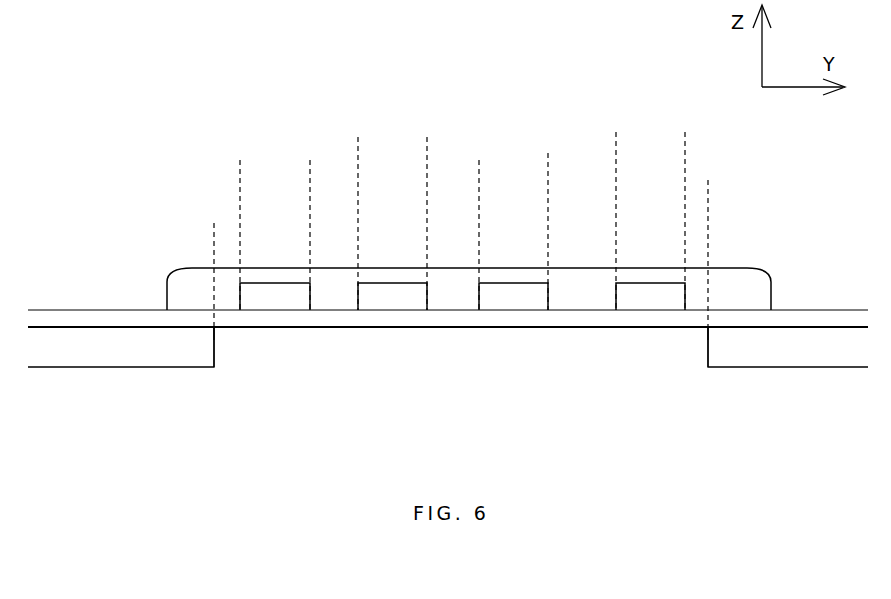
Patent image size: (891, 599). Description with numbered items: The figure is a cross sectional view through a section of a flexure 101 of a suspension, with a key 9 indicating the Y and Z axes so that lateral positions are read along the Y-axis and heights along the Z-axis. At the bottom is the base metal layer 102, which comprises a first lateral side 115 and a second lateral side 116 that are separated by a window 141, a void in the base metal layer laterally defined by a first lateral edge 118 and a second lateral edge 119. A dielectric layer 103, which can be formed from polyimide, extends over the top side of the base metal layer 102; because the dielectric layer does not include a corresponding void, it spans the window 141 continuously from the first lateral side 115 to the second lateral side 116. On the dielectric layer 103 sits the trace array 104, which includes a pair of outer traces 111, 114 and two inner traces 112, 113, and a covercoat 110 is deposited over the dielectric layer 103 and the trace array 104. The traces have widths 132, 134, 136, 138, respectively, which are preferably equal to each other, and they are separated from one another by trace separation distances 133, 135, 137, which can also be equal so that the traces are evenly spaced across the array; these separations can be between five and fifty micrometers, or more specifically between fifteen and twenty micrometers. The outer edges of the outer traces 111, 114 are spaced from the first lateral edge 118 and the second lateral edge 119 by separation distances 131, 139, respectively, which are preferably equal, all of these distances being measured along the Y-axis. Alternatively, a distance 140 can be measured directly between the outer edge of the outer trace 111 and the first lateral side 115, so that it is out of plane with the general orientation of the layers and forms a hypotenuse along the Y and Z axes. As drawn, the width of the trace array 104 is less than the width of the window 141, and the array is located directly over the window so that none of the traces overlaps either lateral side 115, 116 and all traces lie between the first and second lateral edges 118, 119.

The key 9 is at (705, 70).
The flexure 101 is at (473, 83).
The base metal layer 102 is at (82, 352).
The dielectric layer 103 is at (68, 320).
The trace array 104 is at (123, 155).
The covercoat 110 is at (732, 278).
The outer trace 111 is at (275, 296).
The inner trace 112 is at (392, 296).
The inner trace 113 is at (513, 296).
The outer trace 114 is at (650, 296).
The first lateral side 115 is at (191, 359).
The second lateral side 116 is at (743, 355).
The first lateral edge 118 is at (210, 351).
The second lateral edge 119 is at (708, 353).
The separation distance 131 is at (265, 225).
The width 132 is at (335, 160).
The trace separation distance 133 is at (383, 201).
The width 134 is at (452, 138).
The trace separation distance 135 is at (505, 239).
The width 136 is at (575, 168).
The trace separation distance 137 is at (640, 212).
The width 138 is at (710, 138).
The separation distance 139 is at (655, 182).
The distance 140 is at (240, 310).
The window 141 is at (700, 343).